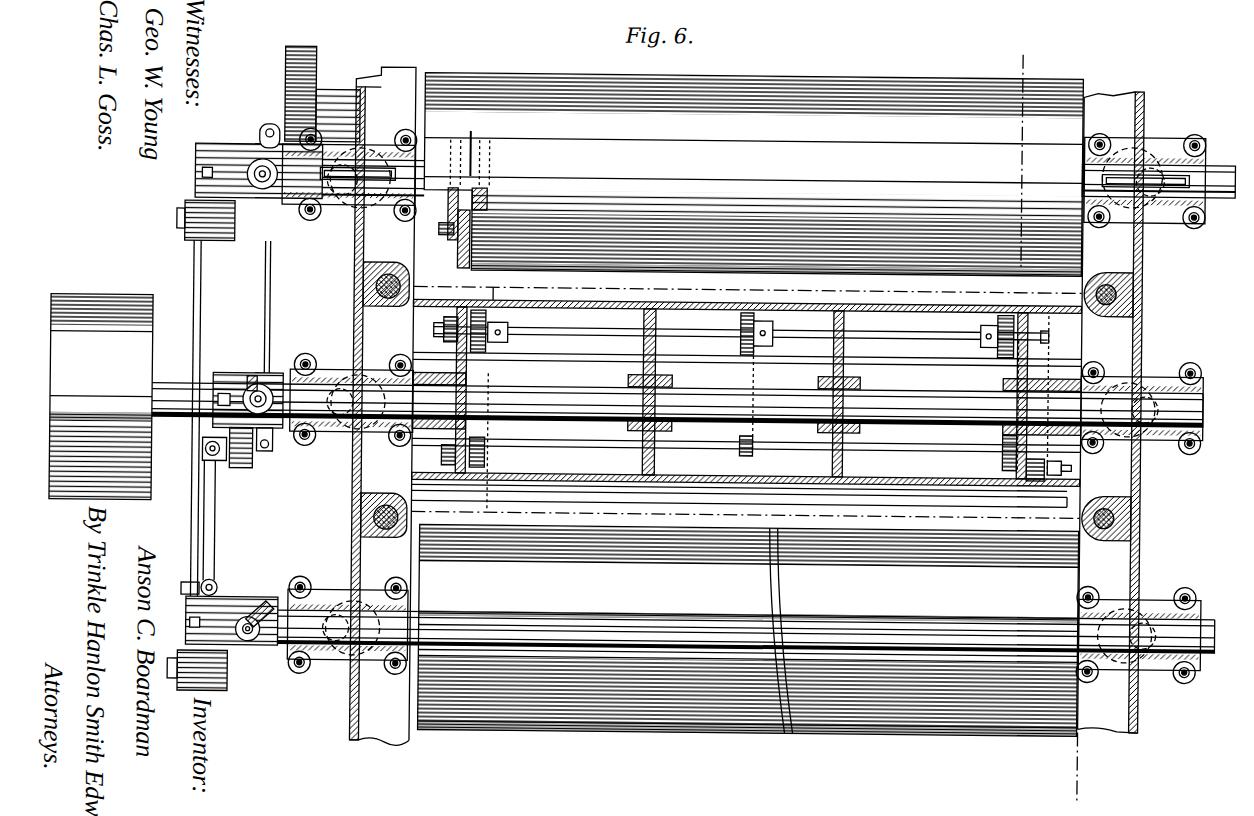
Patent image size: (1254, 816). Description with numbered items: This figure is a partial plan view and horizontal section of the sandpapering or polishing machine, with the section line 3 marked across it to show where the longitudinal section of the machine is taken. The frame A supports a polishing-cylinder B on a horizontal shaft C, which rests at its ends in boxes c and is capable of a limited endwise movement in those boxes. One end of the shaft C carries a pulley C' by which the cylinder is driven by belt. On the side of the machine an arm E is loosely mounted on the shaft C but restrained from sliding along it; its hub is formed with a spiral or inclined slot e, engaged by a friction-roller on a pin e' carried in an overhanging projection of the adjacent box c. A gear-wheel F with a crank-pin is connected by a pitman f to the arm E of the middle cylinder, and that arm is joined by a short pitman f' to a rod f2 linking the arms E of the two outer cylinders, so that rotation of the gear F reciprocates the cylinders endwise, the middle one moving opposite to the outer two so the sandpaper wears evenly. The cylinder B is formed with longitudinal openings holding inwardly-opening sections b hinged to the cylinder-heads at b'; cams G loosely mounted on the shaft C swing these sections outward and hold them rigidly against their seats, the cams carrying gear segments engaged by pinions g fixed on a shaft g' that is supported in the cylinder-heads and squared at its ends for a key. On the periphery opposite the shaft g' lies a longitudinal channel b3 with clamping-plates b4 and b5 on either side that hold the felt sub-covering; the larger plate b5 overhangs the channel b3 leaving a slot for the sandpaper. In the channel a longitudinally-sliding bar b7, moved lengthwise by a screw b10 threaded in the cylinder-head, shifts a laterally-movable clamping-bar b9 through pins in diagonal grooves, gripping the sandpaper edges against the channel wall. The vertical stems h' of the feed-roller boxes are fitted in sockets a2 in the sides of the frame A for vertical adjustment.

The frame A is at (746, 410).
The sockets a2 is at (395, 272).
The vertical stems h' is at (747, 402).
The polishing-cylinders B is at (751, 405).
The cylinder-shaft C is at (692, 389).
The boxes c is at (336, 210).
The pulley C' is at (101, 397).
The gear-wheel F is at (282, 83).
The arms E is at (233, 220).
The spiral slots e is at (253, 372).
The pins e' is at (253, 394).
The pitman f is at (276, 307).
The rod f2 is at (201, 296).
The short pitman f' is at (217, 516).
The inwardly-opening sections b is at (747, 386).
The longitudinal channel b3 is at (565, 477).
The clamping-plate b4 is at (563, 613).
The clamping-plate b5 is at (747, 644).
The longitudinally-sliding bar b7 is at (905, 481).
The clamping-bar b9 is at (567, 484).
The screw b10 is at (1062, 482).
The hinges b' is at (727, 350).
The cams G is at (482, 376).
The pinions g is at (751, 315).
The shaft g' is at (742, 311).
The section line 3 is at (1030, 50).